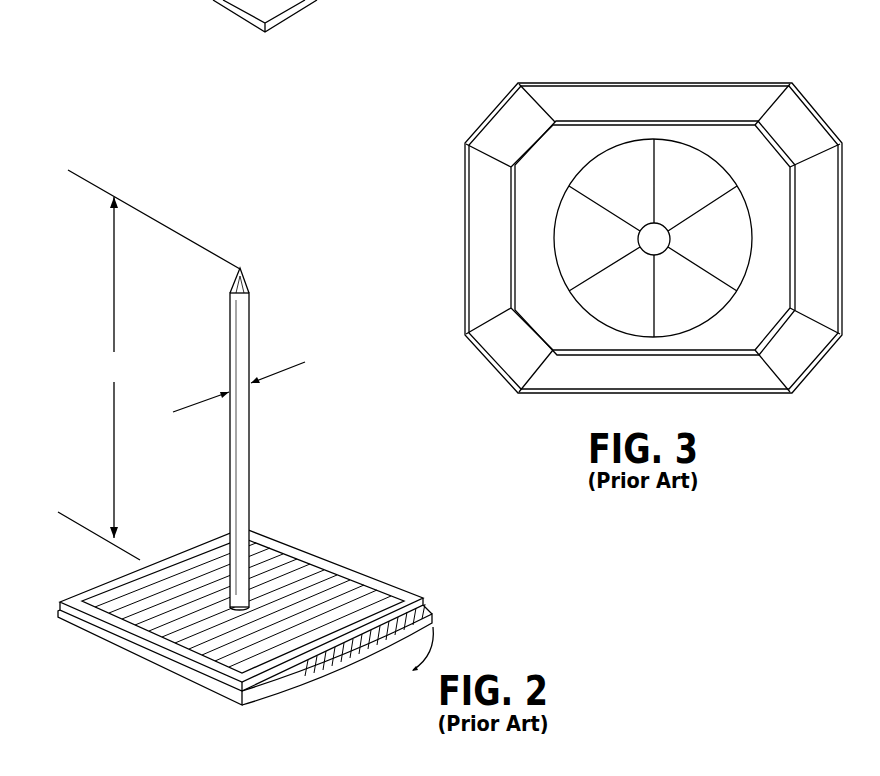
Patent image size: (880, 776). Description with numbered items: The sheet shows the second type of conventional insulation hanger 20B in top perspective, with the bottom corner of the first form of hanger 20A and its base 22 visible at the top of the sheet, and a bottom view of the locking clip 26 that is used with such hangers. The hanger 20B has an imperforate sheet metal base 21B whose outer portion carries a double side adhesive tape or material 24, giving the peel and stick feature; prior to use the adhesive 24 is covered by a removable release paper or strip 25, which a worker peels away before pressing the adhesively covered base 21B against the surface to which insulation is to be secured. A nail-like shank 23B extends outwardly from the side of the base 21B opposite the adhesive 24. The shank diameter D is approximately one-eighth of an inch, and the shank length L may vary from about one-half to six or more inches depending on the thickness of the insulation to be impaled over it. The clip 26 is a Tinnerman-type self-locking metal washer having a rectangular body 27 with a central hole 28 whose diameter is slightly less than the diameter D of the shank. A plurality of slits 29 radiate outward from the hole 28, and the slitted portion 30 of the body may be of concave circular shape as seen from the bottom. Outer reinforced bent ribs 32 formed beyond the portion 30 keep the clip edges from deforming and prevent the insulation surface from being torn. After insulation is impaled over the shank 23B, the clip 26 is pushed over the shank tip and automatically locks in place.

In FIG. 2, the pin assembly (first embodiment) 20A is at (166, 15).
In FIG. 2, the base plate 22 is at (310, 3).
In FIG. 2, the hanger 20B is at (133, 672).
In FIG. 2, the sheet metal base 21B is at (375, 585).
In FIG. 2, the shank 23B is at (250, 410).
In FIG. 2, the double side adhesive tape or material 24 is at (428, 612).
In FIG. 2, the removable release paper or strip 25 is at (377, 640).
In FIG. 2, the length of the shank L is at (149, 365).
In FIG. 2, the diameter of the shank D is at (285, 369).
In FIG. 3, the self-locking metal washer or clip 26 is at (587, 412).
In FIG. 3, the rectangular body 27 is at (465, 230).
In FIG. 3, the central hole 28 is at (648, 224).
In FIG. 3, the slits 29 is at (660, 180).
In FIG. 3, the portion of the body having the slits 30 is at (708, 293).
In FIG. 3, the outer reinforced bent ribs 32 is at (573, 112).